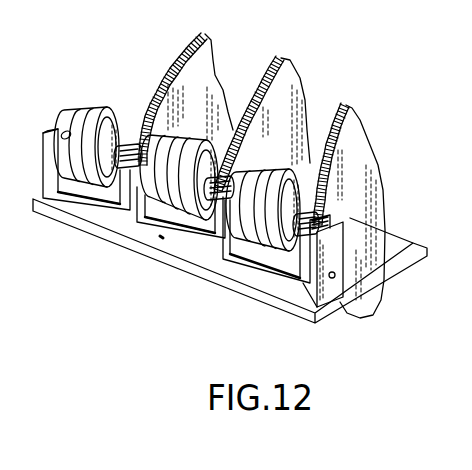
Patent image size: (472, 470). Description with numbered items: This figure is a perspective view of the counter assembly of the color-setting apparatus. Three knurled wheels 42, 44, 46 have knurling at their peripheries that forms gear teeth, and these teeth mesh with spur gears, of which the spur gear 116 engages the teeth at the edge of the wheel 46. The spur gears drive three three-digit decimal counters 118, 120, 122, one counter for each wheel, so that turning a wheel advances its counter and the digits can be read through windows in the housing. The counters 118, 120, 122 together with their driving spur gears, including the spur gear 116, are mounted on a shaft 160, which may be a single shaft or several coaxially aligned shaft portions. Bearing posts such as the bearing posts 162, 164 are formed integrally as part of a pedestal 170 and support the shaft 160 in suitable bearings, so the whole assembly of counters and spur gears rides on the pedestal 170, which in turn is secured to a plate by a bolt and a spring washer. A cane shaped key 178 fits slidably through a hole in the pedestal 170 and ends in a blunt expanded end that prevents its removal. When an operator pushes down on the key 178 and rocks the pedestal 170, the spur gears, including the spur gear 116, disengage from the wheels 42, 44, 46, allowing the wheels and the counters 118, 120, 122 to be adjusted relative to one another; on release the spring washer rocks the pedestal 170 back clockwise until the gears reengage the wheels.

The wheel 42 is at (180, 99).
The wheel 44 is at (262, 110).
The wheel 46 is at (354, 189).
The spur gear 116 is at (227, 270).
The three-digit decimal counter 118 is at (98, 125).
The three-digit decimal counter 120 is at (203, 140).
The three-digit decimal counter 122 is at (284, 164).
The shaft 160 is at (368, 252).
The bearing post 162 is at (41, 123).
The bearing post 164 is at (230, 254).
The pedestal 170 is at (69, 169).
The cane shaped key 178 is at (119, 277).